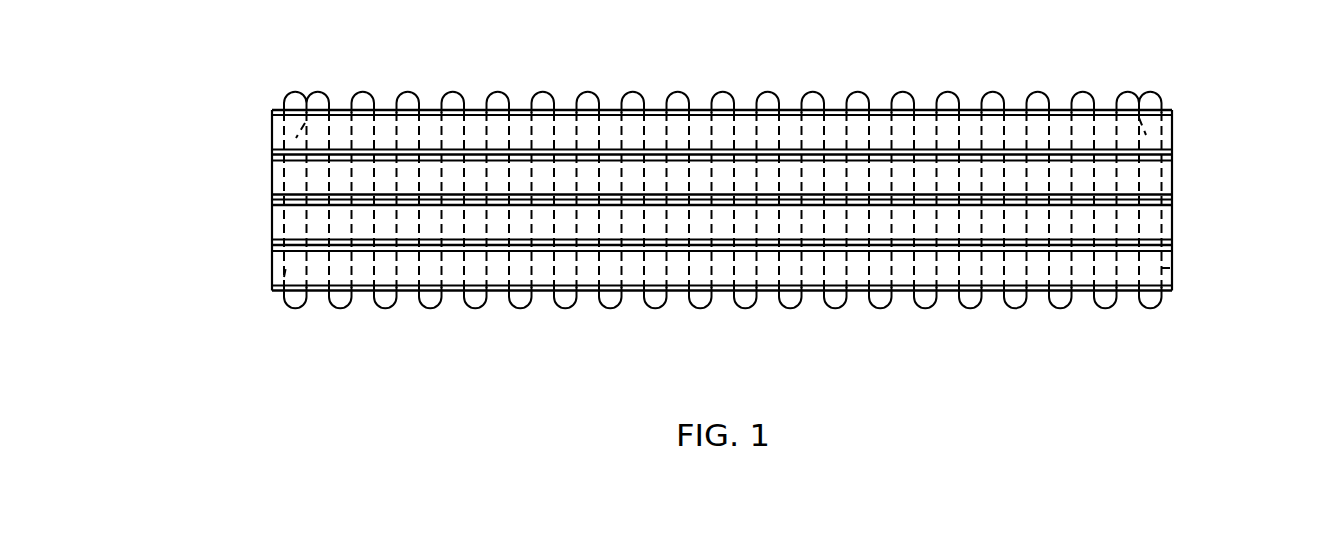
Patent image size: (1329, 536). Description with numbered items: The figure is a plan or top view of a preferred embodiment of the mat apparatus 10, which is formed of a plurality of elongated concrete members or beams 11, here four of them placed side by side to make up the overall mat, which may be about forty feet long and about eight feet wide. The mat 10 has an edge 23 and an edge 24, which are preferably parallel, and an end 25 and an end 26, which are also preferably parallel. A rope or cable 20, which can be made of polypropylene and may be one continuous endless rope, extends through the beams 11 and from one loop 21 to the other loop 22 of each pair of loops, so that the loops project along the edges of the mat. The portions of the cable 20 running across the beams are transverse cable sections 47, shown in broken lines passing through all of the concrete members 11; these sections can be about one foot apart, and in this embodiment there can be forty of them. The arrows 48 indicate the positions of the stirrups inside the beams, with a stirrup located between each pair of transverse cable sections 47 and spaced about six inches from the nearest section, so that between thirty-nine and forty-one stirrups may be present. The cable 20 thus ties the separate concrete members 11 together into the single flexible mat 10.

The mat apparatus 10 is at (366, 419).
The elongated concrete member 11 is at (275, 273).
The cable or rope 20 is at (1062, 307).
The loop 21 is at (543, 93).
The loop 22 is at (475, 307).
The edge 23 is at (630, 292).
The edge 24 is at (564, 110).
The end 25 is at (272, 278).
The end 26 is at (1172, 262).
The transverse cable section 47 is at (668, 144).
The arrows 48 is at (879, 100).